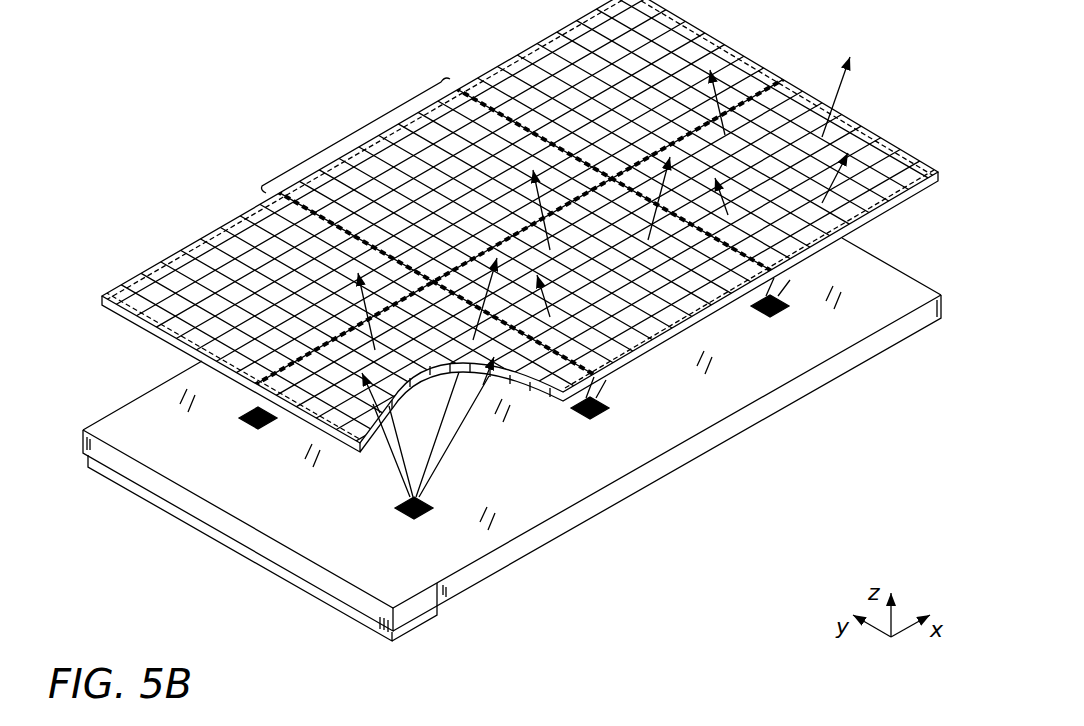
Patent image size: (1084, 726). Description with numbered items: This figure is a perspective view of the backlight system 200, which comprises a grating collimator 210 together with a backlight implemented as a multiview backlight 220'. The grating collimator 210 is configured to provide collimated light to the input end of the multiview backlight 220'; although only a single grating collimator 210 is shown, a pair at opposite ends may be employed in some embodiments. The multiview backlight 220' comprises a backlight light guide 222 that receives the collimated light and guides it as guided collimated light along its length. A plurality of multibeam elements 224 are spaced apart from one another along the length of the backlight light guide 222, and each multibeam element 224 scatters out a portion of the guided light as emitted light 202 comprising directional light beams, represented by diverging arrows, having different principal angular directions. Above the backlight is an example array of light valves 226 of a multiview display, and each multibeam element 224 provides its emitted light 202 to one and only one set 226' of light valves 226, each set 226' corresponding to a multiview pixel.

The backlight system 200 is at (205, 80).
The emitted light 202 is at (872, 72).
The grating collimator 210 is at (221, 523).
The multiview backlight 220' is at (512, 400).
The backlight light guide 222 is at (708, 443).
The multibeam elements 224 is at (785, 320).
The light valves 226 is at (520, 236).
The set of light valves 226' is at (356, 135).